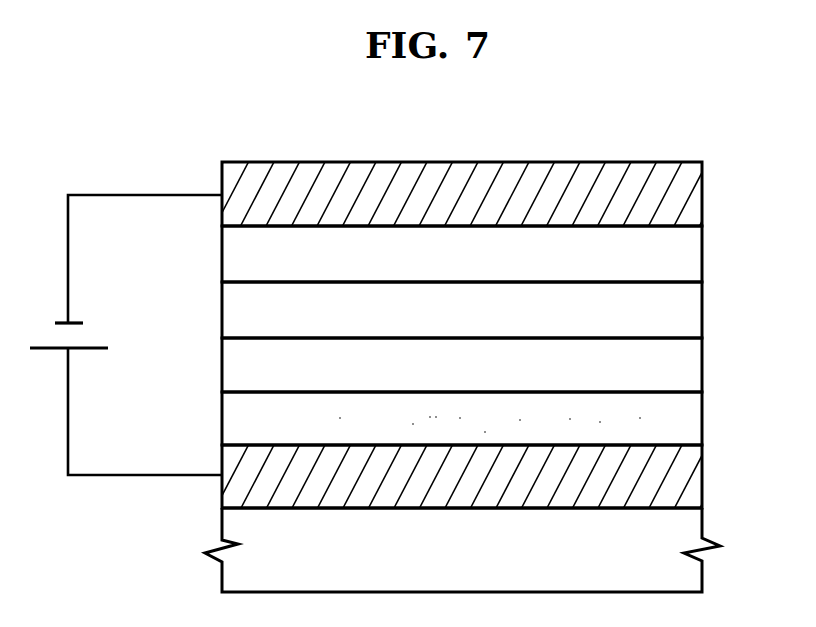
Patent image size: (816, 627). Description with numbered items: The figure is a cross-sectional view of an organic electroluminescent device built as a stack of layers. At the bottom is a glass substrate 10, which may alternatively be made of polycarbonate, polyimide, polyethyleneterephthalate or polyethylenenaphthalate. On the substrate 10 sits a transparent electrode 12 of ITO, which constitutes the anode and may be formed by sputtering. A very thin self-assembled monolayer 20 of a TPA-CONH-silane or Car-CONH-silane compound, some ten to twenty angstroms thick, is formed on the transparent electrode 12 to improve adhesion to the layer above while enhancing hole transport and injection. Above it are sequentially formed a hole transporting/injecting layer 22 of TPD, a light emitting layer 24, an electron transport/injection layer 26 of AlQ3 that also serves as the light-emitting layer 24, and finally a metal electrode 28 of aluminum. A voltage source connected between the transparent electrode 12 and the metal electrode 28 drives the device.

The substrate 10 is at (695, 572).
The transparent electrode 12 is at (695, 472).
The self-assembled monolayer 20 is at (695, 418).
The hole transporting/injecting layer 22 is at (695, 368).
The light emitting layer 24 is at (695, 314).
The electron transport/injection layer 26 is at (695, 254).
The metal electrode 28 is at (695, 197).